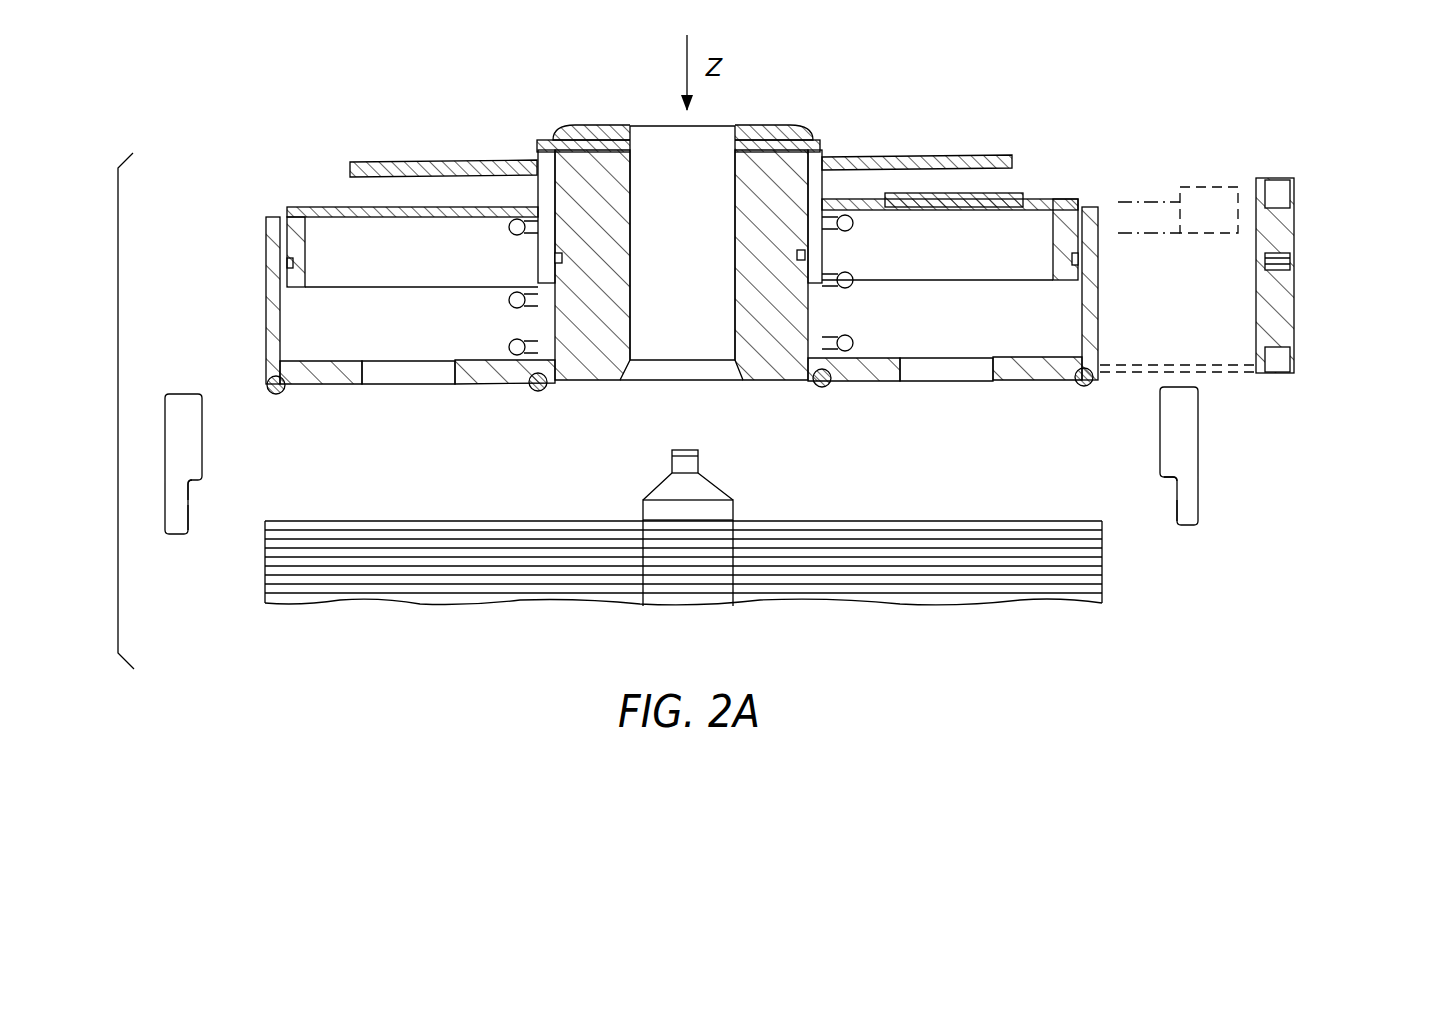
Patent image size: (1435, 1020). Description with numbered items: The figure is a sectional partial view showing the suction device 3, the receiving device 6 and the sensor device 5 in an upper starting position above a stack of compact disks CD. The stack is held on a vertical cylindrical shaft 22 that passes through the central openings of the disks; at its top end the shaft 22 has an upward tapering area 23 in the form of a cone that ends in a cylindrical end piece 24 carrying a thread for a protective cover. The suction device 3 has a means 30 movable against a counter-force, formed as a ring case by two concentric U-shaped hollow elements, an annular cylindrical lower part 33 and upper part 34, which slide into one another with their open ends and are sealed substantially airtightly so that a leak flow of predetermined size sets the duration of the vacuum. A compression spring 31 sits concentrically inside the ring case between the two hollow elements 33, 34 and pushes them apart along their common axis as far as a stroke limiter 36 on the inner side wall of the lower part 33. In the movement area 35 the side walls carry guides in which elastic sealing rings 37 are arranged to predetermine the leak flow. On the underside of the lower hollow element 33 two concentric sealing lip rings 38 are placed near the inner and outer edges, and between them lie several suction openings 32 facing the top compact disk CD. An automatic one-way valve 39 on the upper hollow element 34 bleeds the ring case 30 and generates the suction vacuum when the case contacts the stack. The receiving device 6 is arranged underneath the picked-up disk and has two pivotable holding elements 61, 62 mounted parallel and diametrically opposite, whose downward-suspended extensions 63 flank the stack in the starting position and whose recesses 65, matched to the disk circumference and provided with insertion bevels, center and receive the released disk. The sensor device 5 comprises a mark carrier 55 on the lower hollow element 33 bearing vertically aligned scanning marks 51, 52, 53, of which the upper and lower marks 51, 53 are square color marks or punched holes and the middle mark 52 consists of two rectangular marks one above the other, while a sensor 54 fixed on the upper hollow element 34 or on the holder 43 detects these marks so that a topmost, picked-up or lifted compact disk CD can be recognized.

The suction device 3 is at (537, 122).
The sensor device 5 is at (1263, 237).
The receiving device 6 is at (1224, 487).
The shaft 22 is at (643, 510).
The tapering area 23 is at (657, 488).
The cylindrical end piece 24 is at (700, 458).
The means movable against a counter-force 30 is at (330, 185).
The compression spring 31 is at (852, 336).
The suction opening 32 is at (932, 367).
The lower hollow element 33 is at (641, 321).
The upper hollow element 34 is at (297, 206).
The movement area 35 is at (800, 233).
The stroke limiter 36 is at (817, 138).
The sealing rings 37 is at (288, 262).
The sealing lip rings 38 is at (285, 393).
The one-way valve 39 is at (1005, 192).
The holder 43 is at (928, 153).
The scanning mark 51 is at (1277, 197).
The scanning mark 52 is at (1292, 260).
The scanning mark 53 is at (1282, 363).
The sensor 54 is at (1182, 187).
The mark carrier 55 is at (1297, 320).
The holding element 61 is at (176, 381).
The holding element 62 is at (1201, 428).
The extensions 63 is at (155, 514).
The recesses 65 is at (190, 498).
The compact disk CD is at (1105, 540).